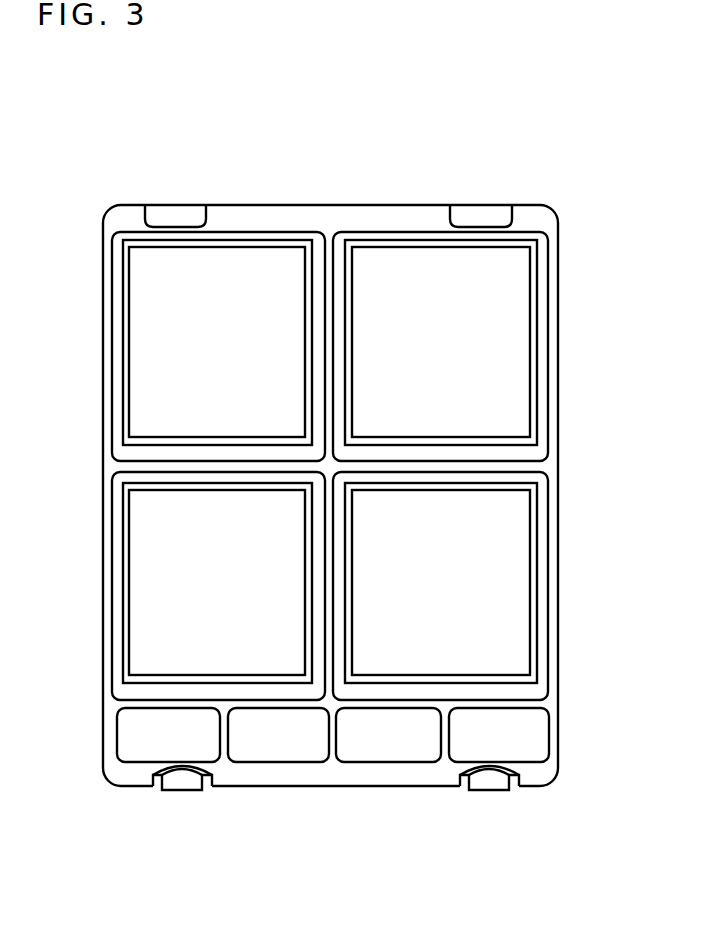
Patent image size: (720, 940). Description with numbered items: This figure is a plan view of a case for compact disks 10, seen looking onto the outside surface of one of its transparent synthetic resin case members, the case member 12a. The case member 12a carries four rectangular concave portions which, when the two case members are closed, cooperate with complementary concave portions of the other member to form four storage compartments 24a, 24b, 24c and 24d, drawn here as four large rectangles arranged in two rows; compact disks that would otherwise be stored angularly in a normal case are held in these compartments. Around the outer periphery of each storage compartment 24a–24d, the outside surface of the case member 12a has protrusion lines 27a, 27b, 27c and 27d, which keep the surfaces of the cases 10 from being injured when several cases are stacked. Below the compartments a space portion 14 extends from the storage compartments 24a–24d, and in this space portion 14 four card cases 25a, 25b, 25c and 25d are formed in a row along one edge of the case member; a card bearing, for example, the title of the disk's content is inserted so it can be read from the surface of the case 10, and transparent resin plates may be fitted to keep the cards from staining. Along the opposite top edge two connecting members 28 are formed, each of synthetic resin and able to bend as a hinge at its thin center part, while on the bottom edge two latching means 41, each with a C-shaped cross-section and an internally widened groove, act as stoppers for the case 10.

The case for compact disks 10 is at (328, 114).
The case member 12a is at (549, 390).
The space portion 14 is at (335, 770).
The storage compartment 24a is at (147, 625).
The storage compartment 24b is at (248, 256).
The storage compartment 24c is at (505, 615).
The storage compartment 24d is at (383, 258).
The card case 25a is at (138, 745).
The card case 25b is at (278, 748).
The card case 25c is at (392, 748).
The card case 25d is at (530, 748).
The protrusion line 27a is at (127, 677).
The protrusion line 27b is at (130, 243).
The protrusion line 27c is at (533, 673).
The protrusion line 27d is at (522, 242).
The connecting member 28 is at (187, 215).
The latching means 41 is at (185, 778).